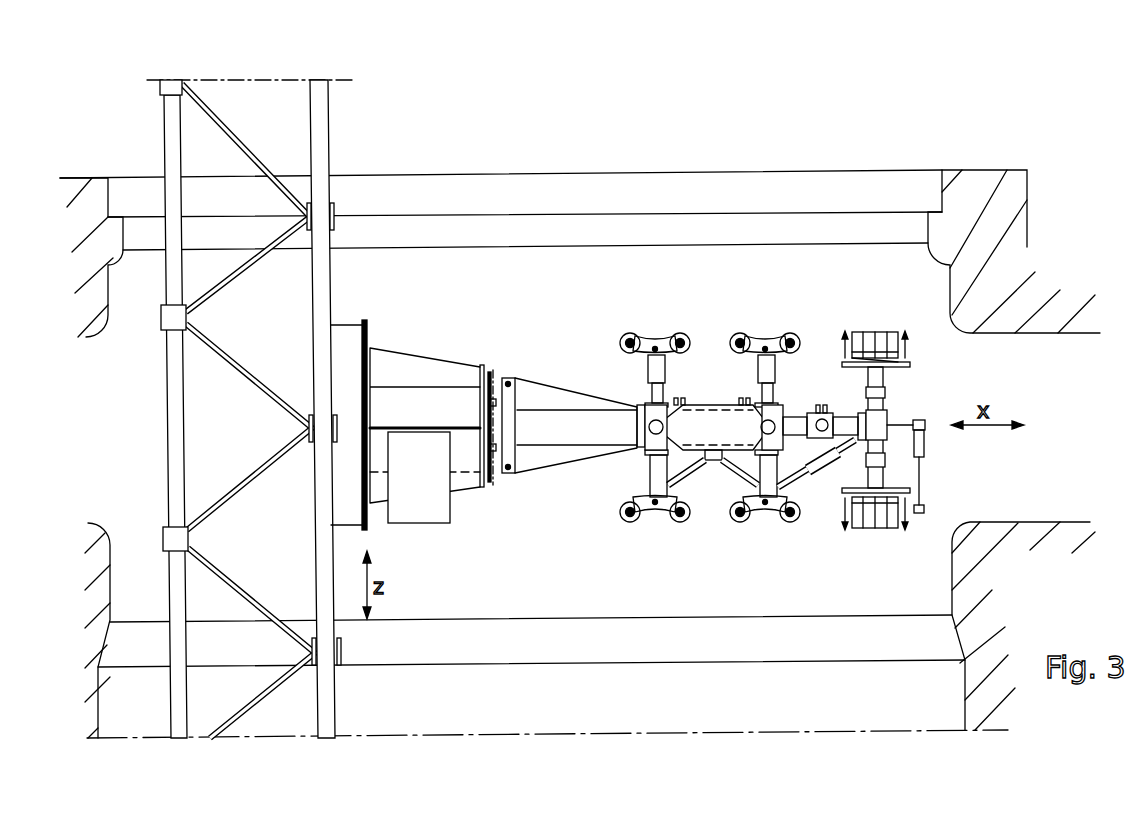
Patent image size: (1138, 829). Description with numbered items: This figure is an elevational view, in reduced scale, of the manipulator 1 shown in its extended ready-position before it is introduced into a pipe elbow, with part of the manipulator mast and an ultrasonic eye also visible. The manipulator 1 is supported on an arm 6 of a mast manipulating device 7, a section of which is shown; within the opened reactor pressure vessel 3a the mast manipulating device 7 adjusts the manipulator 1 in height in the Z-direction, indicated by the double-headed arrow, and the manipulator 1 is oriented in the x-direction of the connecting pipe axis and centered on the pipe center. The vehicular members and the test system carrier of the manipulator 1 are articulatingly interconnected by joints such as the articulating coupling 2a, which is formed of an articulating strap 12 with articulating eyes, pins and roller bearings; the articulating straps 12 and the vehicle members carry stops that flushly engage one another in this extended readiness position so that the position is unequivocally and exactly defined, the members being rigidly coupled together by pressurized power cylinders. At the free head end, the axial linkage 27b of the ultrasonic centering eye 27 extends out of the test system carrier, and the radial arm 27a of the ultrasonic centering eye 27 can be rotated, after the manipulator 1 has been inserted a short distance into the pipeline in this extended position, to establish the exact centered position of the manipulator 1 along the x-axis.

The manipulator 1 is at (545, 376).
The articulating coupling 2a is at (652, 440).
The reactor pressure vessel 3a is at (973, 190).
The arm 6 is at (421, 353).
The mast manipulating device 7 is at (330, 291).
The articulating strap 12 is at (700, 420).
The ultrasonic centering eye 27 is at (926, 510).
The radial arm 27a is at (924, 454).
The axial linkage 27b is at (901, 422).